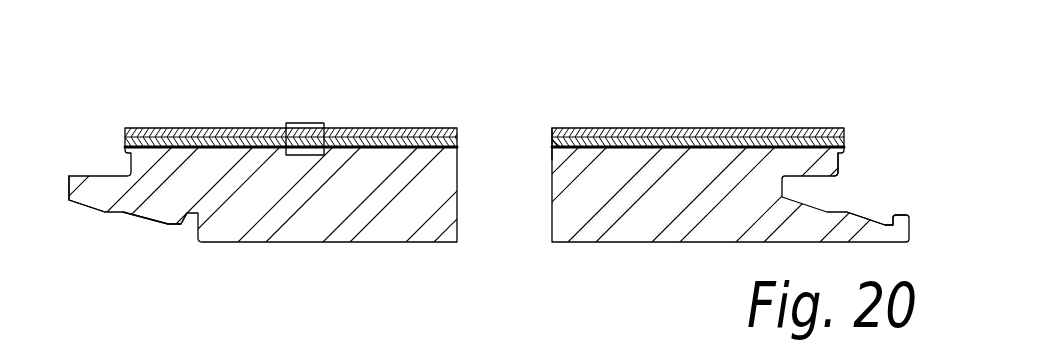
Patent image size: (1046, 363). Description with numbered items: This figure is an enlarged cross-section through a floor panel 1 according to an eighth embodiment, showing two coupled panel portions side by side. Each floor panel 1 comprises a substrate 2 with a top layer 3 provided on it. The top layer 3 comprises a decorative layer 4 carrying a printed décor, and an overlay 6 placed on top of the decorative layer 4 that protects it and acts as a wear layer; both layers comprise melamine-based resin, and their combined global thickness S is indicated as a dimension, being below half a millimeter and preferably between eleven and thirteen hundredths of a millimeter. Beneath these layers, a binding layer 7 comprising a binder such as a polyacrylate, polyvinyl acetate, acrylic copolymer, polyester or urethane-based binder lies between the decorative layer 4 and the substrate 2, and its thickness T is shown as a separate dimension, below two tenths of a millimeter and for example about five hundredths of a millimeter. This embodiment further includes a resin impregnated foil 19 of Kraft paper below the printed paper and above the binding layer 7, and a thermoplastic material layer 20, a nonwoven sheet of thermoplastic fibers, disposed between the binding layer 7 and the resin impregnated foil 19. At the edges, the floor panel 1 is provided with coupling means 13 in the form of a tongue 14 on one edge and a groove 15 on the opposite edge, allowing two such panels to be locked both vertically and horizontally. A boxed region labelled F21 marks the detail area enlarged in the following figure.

The floor panel 1 is at (268, 173).
The substrate 2 is at (332, 225).
The top layer 3 is at (475, 162).
The decorative layer 4 is at (552, 138).
The overlay 6 is at (632, 133).
The binding layer 7 is at (448, 148).
The coupling means 13 is at (160, 253).
The tongue 14 is at (104, 193).
The groove 15 is at (863, 217).
The resin impregnated foil 19 is at (551, 143).
The thermoplastic material layer 20 is at (552, 147).
The thickness of binding layer T is at (101, 163).
The global thickness of melamine resin layers S is at (870, 162).
The detail region shown in Fig. 21 F21 is at (303, 122).